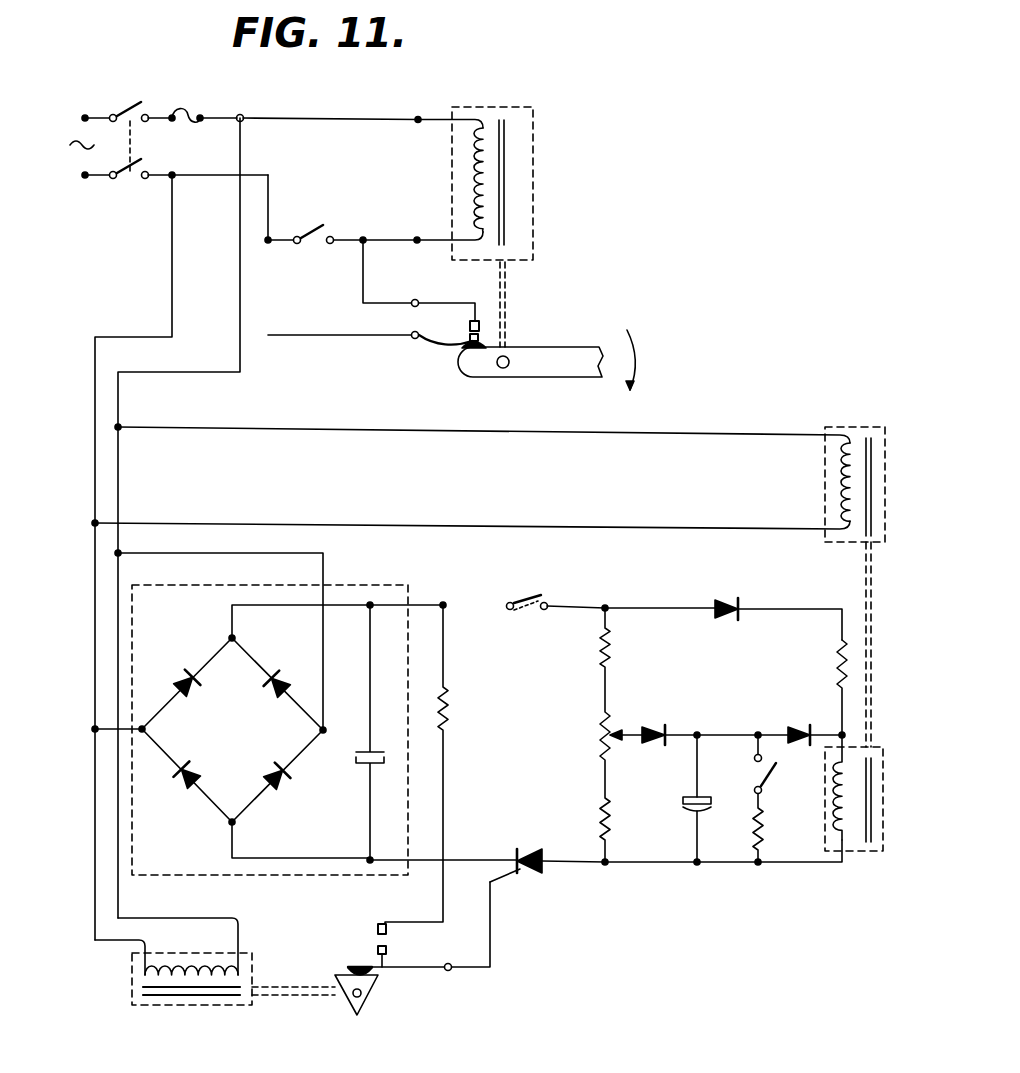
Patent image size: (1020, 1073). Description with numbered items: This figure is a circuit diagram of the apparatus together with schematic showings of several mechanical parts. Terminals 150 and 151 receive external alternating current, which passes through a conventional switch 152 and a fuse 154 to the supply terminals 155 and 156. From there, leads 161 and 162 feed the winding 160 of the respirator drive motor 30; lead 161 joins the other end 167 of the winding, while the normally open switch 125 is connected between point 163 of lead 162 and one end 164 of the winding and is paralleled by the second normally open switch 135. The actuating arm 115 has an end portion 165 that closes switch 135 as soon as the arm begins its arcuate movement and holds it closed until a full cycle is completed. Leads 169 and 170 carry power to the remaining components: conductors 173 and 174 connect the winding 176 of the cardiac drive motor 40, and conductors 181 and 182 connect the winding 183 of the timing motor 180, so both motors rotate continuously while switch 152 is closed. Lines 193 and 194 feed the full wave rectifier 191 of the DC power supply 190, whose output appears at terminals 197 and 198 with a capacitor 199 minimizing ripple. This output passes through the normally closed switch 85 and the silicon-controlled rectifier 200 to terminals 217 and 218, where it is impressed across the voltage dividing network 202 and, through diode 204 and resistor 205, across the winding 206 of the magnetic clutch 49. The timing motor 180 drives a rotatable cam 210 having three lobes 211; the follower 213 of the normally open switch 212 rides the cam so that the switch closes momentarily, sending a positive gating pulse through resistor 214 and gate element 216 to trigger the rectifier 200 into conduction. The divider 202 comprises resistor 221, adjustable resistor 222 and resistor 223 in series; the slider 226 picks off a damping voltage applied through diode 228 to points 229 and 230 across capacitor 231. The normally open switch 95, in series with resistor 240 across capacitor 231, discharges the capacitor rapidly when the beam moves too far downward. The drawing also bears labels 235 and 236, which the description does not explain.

The respirator drive motor 30 is at (502, 178).
The cardiac drive motor 40 is at (829, 568).
The magnetic clutch 49 is at (829, 828).
The normally closed switch 85 is at (550, 601).
The normally open switch 95 is at (772, 768).
The actuating arm 115 is at (550, 348).
The normally open switch 125 is at (337, 226).
The second normally open switch 135 is at (454, 294).
The terminal 150 is at (85, 117).
The terminal 151 is at (85, 175).
The switch 152 is at (152, 108).
The fuse 154 is at (195, 118).
The supply terminal 155 is at (247, 118).
The supply terminal 156 is at (174, 175).
The winding 160 is at (470, 170).
The lead 161 is at (323, 119).
The lead 162 is at (270, 195).
The point 163 is at (268, 240).
The end of winding 164 is at (419, 238).
The end portion 165 is at (460, 363).
The other end of winding 167 is at (416, 118).
The lead 169 is at (245, 350).
The lead 170 is at (172, 284).
The conductor 173 is at (641, 430).
The conductor 174 is at (570, 526).
The winding 176 is at (832, 485).
The timing motor 180 is at (233, 994).
The conductor 181 is at (169, 918).
The conductor 182 is at (108, 940).
The winding 183 is at (221, 962).
The DC power supply 190 is at (254, 710).
The full wave rectifier 191 is at (300, 788).
The line 193 is at (219, 556).
The line 194 is at (142, 729).
The DC output terminal 197 is at (374, 603).
The DC output terminal 198 is at (370, 862).
The capacitor 199 is at (370, 750).
The silicon-controlled rectifier 200 is at (530, 878).
The voltage dividing network 202 is at (602, 735).
The diode 204 is at (736, 606).
The resistor 205 is at (840, 666).
The winding 206 is at (834, 819).
The rotatable cam 210 is at (360, 993).
The lobe 211 is at (374, 978).
The normally open switch 212 is at (375, 941).
The follower 213 is at (425, 967).
The resistor 214 is at (447, 708).
The gate element 216 is at (490, 882).
The terminal 217 is at (612, 612).
The terminal 218 is at (606, 865).
The resistor 221 is at (609, 662).
The adjustable resistor 222 is at (608, 745).
The resistor 223 is at (609, 820).
The slider 226 is at (612, 726).
The diode 228 is at (666, 732).
The point 229 is at (704, 735).
The point 230 is at (699, 862).
The capacitor 231 is at (699, 810).
The diode 235 is at (792, 727).
The conductor 236 is at (840, 732).
The resistor 240 is at (767, 868).